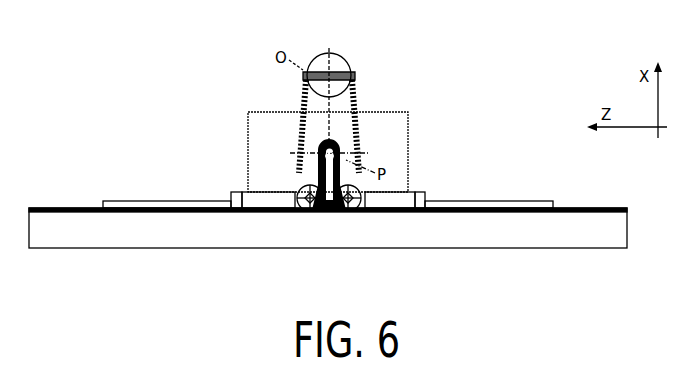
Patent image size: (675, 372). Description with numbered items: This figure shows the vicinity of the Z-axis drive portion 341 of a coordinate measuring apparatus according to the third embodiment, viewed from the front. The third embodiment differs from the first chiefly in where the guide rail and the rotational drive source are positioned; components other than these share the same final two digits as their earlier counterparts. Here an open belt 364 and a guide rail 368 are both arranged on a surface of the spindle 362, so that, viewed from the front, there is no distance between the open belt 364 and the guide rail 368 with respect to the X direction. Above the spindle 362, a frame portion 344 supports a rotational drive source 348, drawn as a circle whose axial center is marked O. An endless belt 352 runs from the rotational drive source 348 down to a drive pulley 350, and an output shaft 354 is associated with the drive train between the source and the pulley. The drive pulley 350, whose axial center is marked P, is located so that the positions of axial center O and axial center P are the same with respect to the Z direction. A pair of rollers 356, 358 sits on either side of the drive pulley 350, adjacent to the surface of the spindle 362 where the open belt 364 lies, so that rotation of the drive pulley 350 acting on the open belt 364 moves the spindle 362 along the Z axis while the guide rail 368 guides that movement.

The Z-axis drive portion 341 is at (424, 52).
The frame portion 344 is at (398, 123).
The rotational drive source 348 is at (341, 66).
The drive pulley 350 is at (318, 170).
The endless belt 352 is at (303, 110).
The output shaft 354 is at (331, 143).
The roller 356 is at (358, 213).
The roller 358 is at (305, 213).
The spindle 362 is at (351, 243).
The open belt 364 is at (421, 193).
The guide rail 368 is at (530, 201).